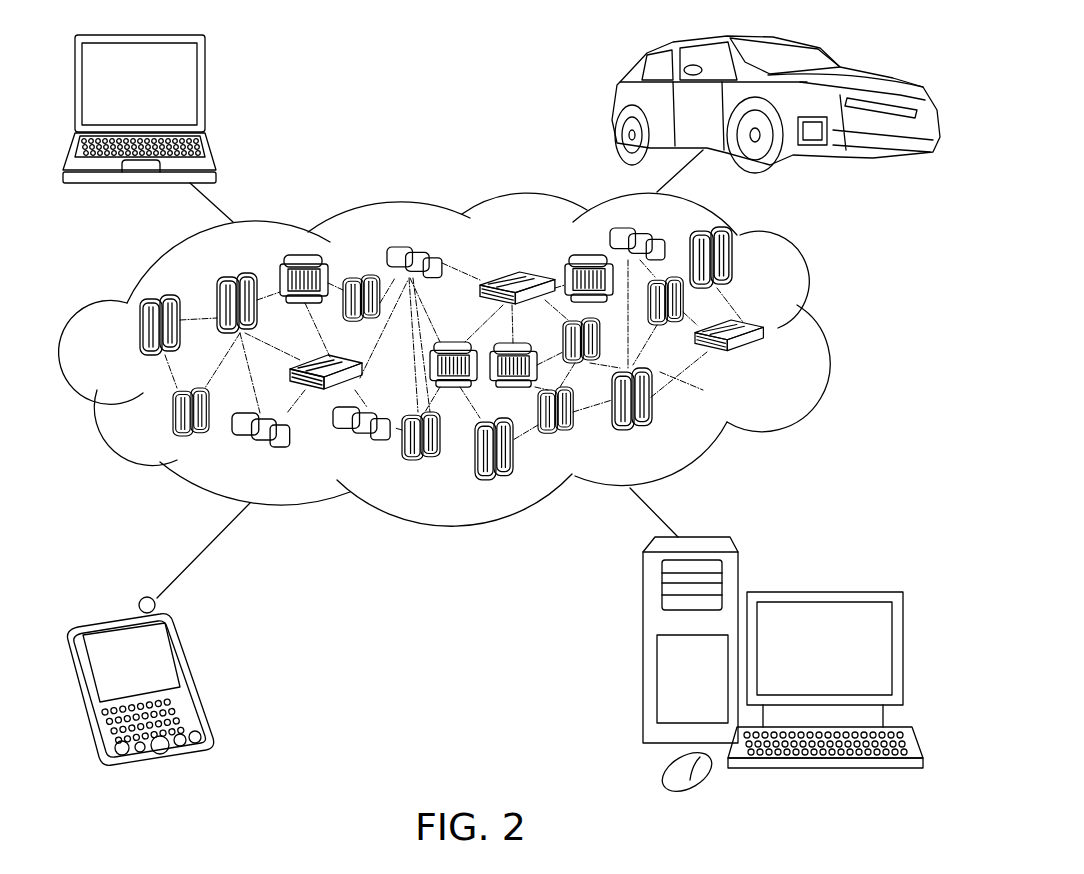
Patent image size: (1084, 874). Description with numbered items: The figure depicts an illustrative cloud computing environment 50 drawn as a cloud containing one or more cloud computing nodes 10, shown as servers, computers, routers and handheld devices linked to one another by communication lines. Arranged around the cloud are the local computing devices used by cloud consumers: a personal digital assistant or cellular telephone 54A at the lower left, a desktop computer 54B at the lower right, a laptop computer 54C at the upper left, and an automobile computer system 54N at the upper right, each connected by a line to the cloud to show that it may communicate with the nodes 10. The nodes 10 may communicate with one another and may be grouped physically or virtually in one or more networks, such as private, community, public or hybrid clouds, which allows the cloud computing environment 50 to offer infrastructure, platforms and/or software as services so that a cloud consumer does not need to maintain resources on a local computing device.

The cloud computing node 10 is at (784, 367).
The cloud computing environment 50 is at (821, 335).
The personal digital assistant (PDA) or cellular telephone 54A is at (195, 672).
The desktop computer 54B is at (820, 592).
The laptop computer 54C is at (206, 86).
The automobile computer system 54N is at (613, 108).